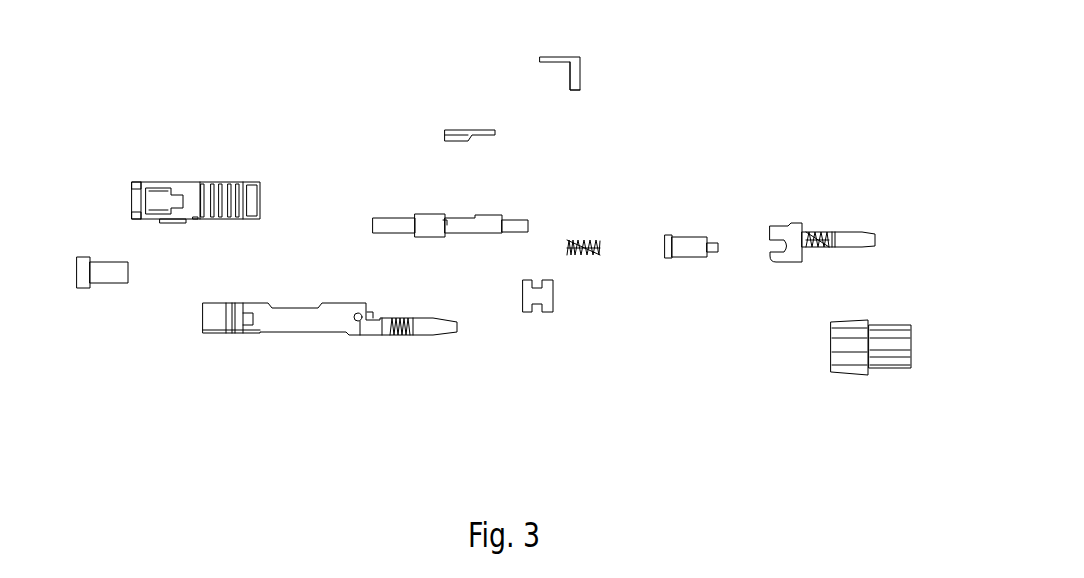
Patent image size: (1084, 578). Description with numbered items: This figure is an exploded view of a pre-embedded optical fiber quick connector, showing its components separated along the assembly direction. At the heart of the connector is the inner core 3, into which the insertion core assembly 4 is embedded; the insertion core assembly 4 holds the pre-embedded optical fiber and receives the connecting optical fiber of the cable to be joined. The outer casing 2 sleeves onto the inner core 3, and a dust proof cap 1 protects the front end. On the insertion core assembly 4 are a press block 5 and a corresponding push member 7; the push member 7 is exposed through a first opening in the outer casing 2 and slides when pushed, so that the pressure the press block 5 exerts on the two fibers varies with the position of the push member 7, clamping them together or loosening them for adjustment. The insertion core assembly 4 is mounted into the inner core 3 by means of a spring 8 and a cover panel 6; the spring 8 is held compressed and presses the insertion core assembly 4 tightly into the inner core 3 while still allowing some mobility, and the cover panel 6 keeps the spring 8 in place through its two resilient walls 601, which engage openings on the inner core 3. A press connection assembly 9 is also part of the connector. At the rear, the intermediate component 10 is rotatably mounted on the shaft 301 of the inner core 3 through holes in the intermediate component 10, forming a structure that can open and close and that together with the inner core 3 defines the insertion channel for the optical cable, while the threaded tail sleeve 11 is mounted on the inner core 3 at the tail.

The dust proof cap 1 is at (102, 282).
The outer casing 2 is at (190, 193).
The inner core 3 is at (290, 322).
The shaft 301 is at (357, 335).
The insertion core assembly 4 is at (427, 226).
The press block 5 is at (447, 136).
The cover panel 6 is at (580, 60).
The resilient walls 601 is at (580, 90).
The push member 7 is at (542, 283).
The spring 8 is at (598, 238).
The press connection assembly 9 is at (690, 235).
The intermediate component 10 is at (848, 232).
The threaded tail sleeve 11 is at (848, 357).